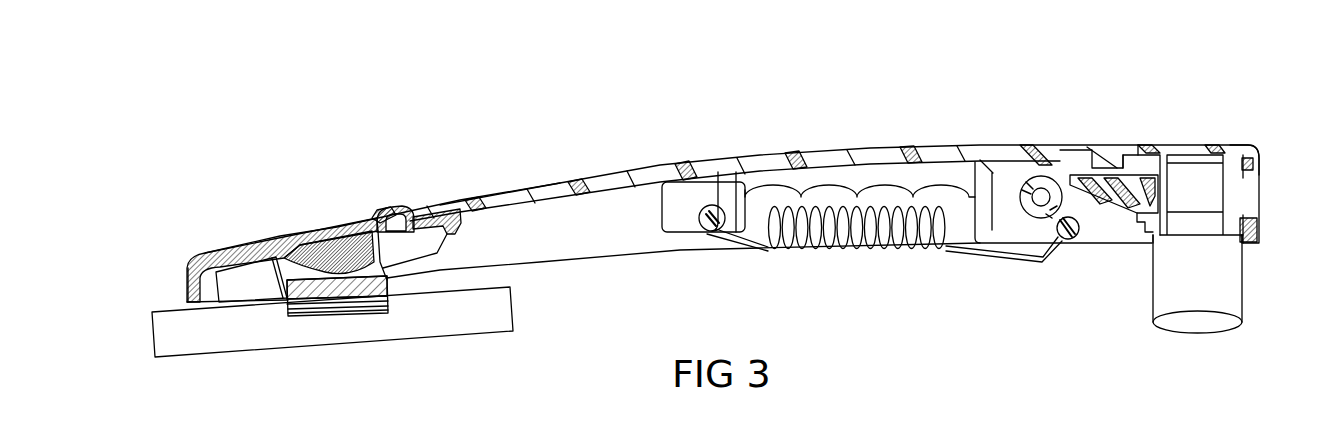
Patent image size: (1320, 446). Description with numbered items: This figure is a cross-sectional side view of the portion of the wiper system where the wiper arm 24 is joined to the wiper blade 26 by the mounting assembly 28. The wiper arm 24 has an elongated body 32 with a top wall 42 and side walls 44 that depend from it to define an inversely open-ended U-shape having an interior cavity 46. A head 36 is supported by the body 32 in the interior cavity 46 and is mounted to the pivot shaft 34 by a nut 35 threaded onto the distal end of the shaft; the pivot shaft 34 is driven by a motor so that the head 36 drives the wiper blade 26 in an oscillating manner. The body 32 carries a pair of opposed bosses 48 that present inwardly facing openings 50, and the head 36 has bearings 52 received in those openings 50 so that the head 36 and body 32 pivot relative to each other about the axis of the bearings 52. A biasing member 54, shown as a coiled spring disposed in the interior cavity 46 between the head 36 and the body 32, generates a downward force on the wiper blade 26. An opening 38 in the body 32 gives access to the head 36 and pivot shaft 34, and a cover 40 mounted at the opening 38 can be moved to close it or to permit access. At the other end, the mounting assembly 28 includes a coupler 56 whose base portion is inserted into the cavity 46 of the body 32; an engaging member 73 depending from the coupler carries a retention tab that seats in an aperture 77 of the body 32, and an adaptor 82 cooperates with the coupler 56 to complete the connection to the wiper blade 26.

The wiper arm assembly 24 is at (458, 162).
The wiper assembly 26 is at (357, 344).
The mounting assembly 28 is at (258, 240).
The elongated body 32 is at (695, 160).
The pivot shaft 34 is at (1227, 282).
The nut 35 is at (1207, 197).
The head 36 is at (1128, 246).
The opening 38 is at (1137, 152).
The cover 40 is at (1240, 140).
The top wall 42 is at (727, 165).
The side walls 44 is at (617, 213).
The interior cavity 46 is at (860, 165).
The bosses 48 is at (1064, 244).
The inwardly facing openings 50 is at (1057, 162).
The bearings 52 is at (1020, 208).
The biasing member 54 is at (861, 251).
The coupler 56 is at (184, 277).
The engaging member 73 is at (372, 212).
The aperture 77 is at (397, 207).
The adaptor 82 is at (398, 278).